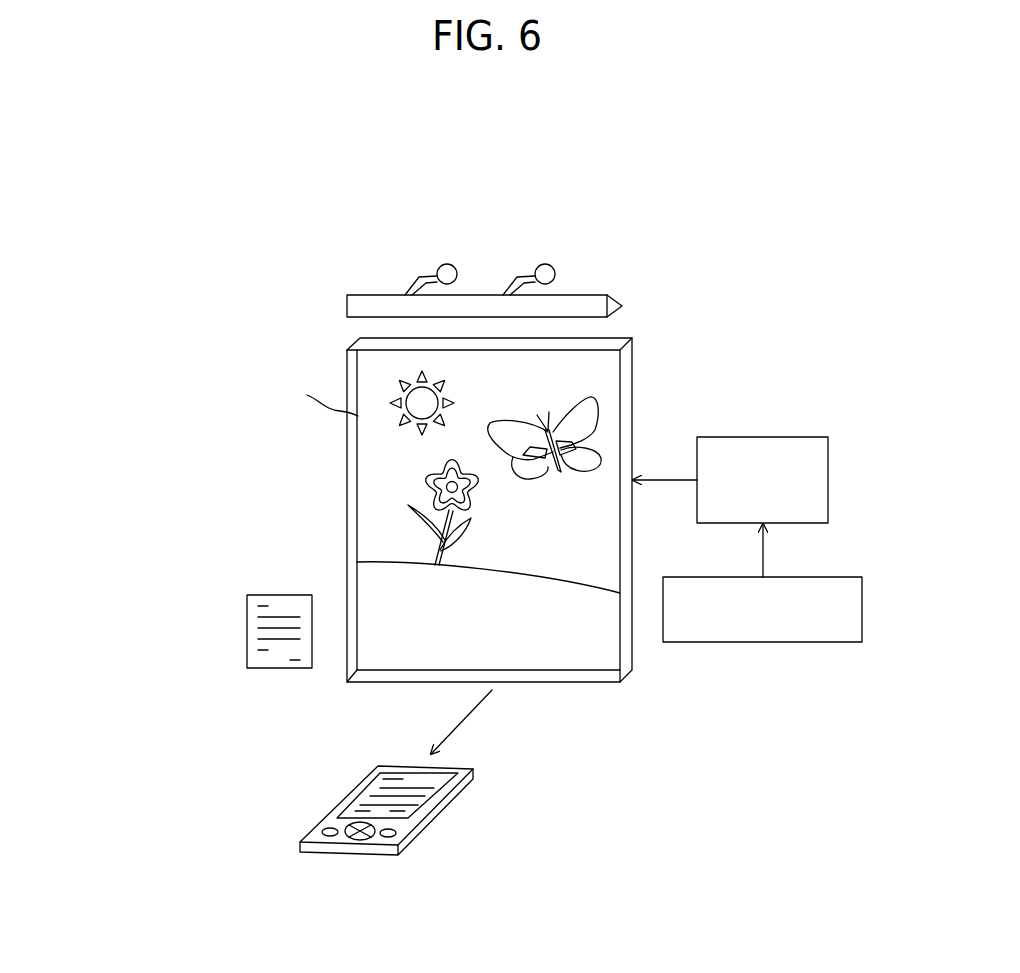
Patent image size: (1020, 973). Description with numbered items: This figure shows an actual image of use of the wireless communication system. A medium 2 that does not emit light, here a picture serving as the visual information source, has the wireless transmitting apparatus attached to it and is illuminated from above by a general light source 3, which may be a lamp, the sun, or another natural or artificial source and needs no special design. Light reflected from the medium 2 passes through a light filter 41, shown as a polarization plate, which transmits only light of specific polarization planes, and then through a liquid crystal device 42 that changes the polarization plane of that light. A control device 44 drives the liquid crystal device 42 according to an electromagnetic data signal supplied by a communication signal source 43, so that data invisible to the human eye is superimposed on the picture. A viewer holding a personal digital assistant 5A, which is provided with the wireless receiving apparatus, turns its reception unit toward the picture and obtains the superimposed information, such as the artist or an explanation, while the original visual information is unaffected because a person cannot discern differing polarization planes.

The general light source 3 is at (595, 303).
The light filter 41 is at (354, 471).
The liquid crystal device 42 is at (355, 523).
The medium 2 is at (367, 572).
The control device 44 is at (828, 476).
The communication signal source 43 is at (862, 603).
The personal digital assistant 5A is at (362, 790).